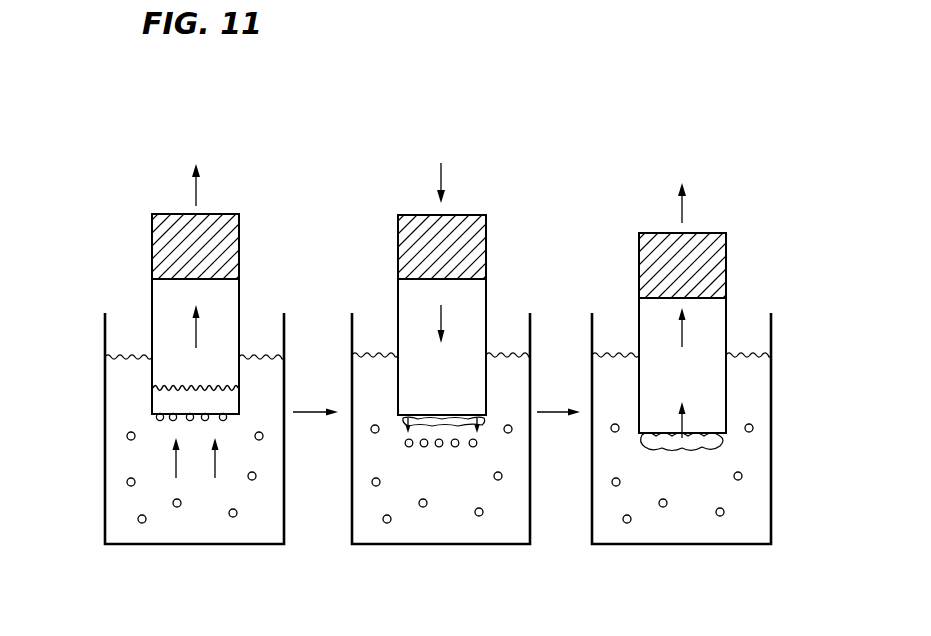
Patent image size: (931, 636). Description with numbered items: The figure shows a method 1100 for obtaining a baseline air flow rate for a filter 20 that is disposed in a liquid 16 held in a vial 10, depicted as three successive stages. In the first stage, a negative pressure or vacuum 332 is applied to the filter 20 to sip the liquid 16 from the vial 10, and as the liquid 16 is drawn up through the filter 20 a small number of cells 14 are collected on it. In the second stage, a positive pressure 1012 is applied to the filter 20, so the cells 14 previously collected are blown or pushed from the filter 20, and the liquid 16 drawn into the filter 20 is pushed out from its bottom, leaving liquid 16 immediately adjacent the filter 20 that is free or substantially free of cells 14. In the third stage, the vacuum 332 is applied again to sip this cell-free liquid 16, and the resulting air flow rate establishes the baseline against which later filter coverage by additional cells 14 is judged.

The vial 10 is at (105, 497).
The cells 14 is at (158, 421).
The liquid 16 is at (120, 380).
The filter 20 is at (240, 298).
The negative pressure or vacuum 332 is at (429, 164).
The positive pressure 1012 is at (458, 154).
The method 1100 is at (779, 184).